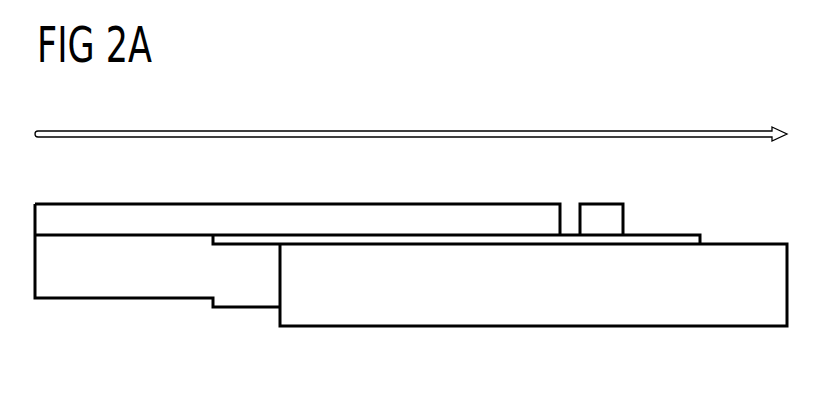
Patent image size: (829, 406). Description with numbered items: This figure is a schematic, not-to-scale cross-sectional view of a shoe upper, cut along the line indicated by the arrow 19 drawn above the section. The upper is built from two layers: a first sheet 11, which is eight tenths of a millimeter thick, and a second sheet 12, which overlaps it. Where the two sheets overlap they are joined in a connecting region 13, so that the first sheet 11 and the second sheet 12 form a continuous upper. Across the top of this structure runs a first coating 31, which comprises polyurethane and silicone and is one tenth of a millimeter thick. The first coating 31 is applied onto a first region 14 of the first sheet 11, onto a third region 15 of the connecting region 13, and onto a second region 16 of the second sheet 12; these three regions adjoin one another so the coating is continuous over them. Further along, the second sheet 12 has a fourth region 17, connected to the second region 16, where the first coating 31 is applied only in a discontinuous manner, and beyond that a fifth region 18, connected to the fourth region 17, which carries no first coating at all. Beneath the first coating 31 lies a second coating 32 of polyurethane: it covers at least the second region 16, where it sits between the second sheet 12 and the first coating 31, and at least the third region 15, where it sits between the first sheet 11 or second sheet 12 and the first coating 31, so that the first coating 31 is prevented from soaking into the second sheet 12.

The first sheet 11 is at (162, 282).
The second sheet 12 is at (698, 305).
The connecting region 13 is at (348, 196).
The first region 14 is at (213, 196).
The third region 15 is at (280, 229).
The second region 16 is at (530, 196).
The fourth region 17 is at (700, 196).
The fifth region 18 is at (787, 196).
The arrow 19 is at (410, 130).
The first coating 31 is at (528, 228).
The second coating 32 is at (457, 240).